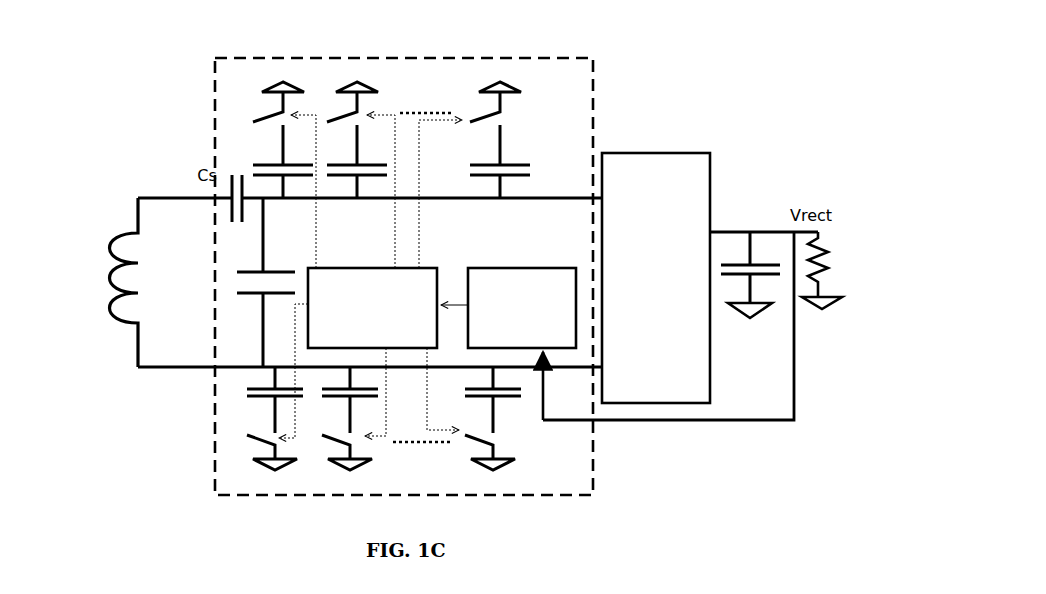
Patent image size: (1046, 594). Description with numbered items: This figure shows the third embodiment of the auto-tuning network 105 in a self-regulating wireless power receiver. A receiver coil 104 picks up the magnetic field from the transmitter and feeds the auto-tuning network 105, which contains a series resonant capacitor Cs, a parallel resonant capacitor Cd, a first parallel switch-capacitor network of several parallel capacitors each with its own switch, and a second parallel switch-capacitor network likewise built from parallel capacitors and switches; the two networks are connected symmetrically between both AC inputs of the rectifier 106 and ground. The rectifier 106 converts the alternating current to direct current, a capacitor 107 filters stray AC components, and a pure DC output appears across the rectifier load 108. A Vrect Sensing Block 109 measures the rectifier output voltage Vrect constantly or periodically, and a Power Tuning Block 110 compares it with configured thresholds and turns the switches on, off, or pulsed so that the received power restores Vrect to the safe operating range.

The receiver coil 104 is at (100, 368).
The auto-tuning network 105 is at (493, 58).
The rectifier 106 is at (628, 153).
The capacitor 107 is at (727, 327).
The rectifier load 108 is at (818, 278).
The Vrect Sensing Block 109 is at (500, 268).
The Power Tuning Block 110 is at (357, 268).